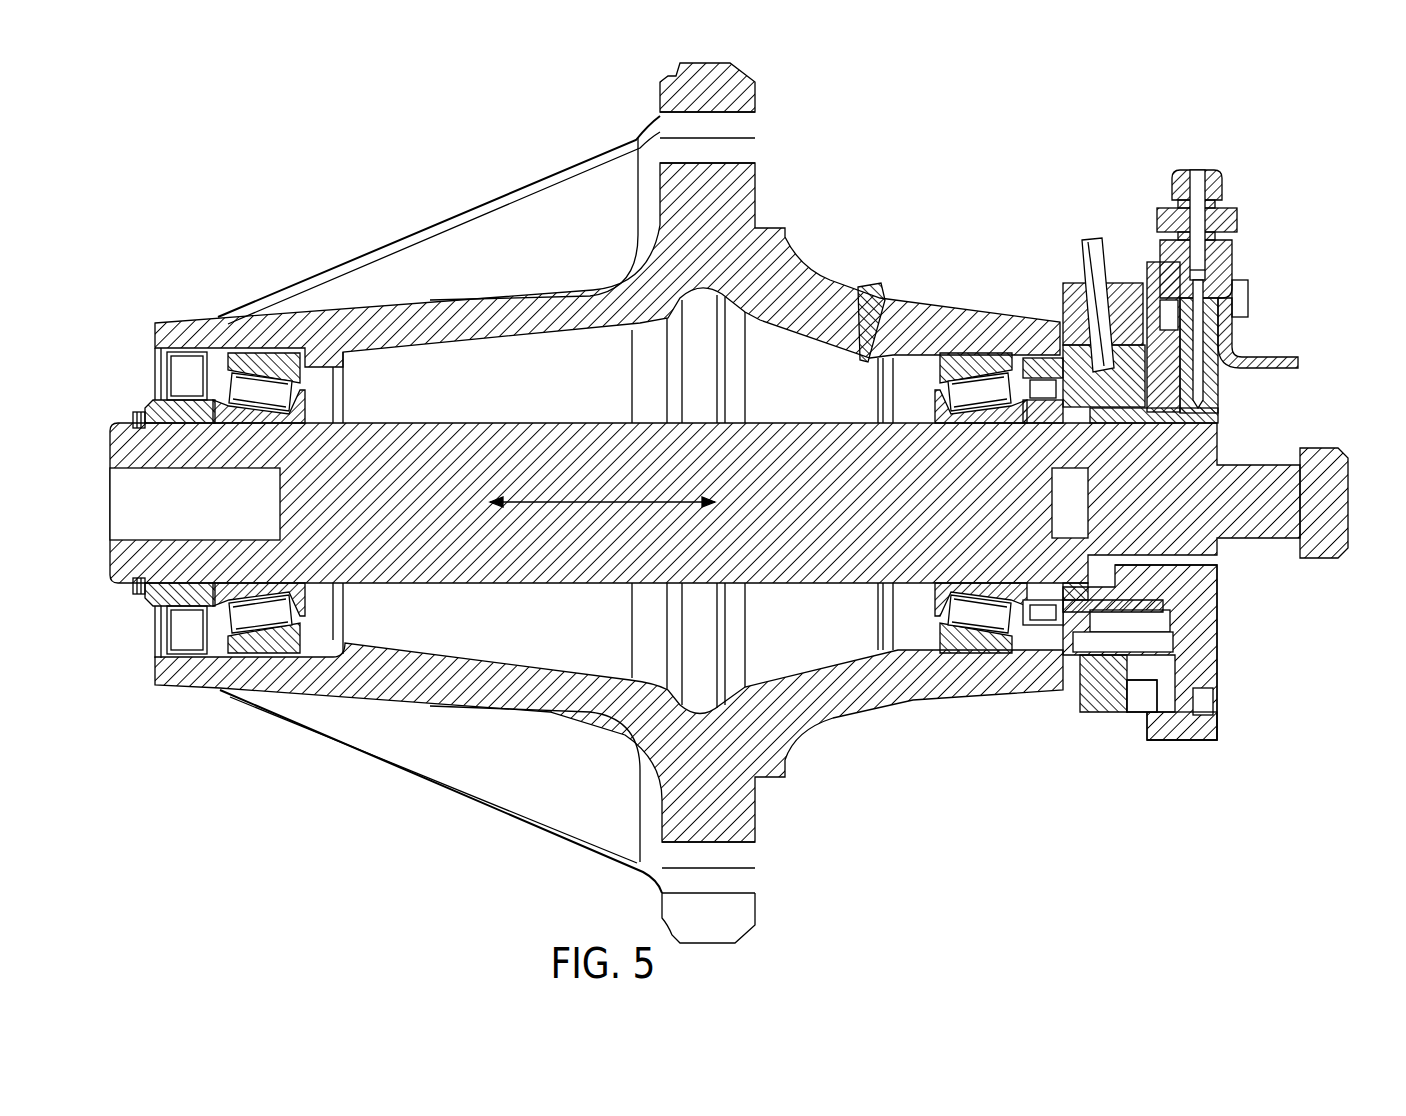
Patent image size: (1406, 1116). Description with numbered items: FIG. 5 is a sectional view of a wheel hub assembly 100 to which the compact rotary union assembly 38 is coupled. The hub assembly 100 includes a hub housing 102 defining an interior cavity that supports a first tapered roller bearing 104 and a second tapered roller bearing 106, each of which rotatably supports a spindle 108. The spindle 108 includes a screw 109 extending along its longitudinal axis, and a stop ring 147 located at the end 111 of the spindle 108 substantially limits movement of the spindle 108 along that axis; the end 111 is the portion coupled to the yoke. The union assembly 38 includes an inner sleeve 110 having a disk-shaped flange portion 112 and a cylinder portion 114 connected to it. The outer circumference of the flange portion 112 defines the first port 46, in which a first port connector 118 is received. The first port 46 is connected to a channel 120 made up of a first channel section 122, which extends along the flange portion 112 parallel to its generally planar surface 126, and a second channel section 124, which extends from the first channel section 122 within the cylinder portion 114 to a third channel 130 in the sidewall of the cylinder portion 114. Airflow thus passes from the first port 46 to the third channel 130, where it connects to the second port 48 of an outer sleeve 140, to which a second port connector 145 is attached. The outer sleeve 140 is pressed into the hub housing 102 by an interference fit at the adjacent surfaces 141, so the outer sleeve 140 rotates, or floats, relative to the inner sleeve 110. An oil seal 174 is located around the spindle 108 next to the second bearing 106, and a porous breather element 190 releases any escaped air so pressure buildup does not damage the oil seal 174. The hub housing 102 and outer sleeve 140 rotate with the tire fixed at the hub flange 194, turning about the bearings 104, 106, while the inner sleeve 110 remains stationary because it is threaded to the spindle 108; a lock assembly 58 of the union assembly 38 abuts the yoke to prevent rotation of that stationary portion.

The wheel hub assembly 100 is at (430, 165).
The hub housing 102 is at (313, 286).
The first tapered roller bearing 104 is at (250, 640).
The second tapered roller bearing 106 is at (957, 635).
The spindle 108 is at (432, 585).
The screw 109 is at (1340, 480).
The inner sleeve 110 is at (1220, 650).
The end of the spindle 111 is at (100, 432).
The flange portion 112 is at (540, 500).
The cylinder portion 114 is at (1078, 663).
The first port connector 118 is at (1206, 196).
The channel 120 is at (1220, 380).
The first channel section 122 is at (1200, 312).
The second channel section 124 is at (1205, 414).
The planar surface 126 is at (1222, 727).
The third channel 130 is at (1110, 392).
The outer sleeve 140 is at (1117, 676).
The adjacent surfaces 141 is at (1037, 357).
The second port connector 145 is at (1080, 247).
The stop ring 147 is at (132, 590).
The oil seal 174 is at (1040, 630).
The breather element 190 is at (1097, 705).
The hub flange 194 is at (757, 92).
The compact rotary union assembly 38 is at (1228, 299).
The first port 46 is at (1212, 257).
The second port 48 is at (1112, 337).
The lock assembly 58 is at (1282, 355).